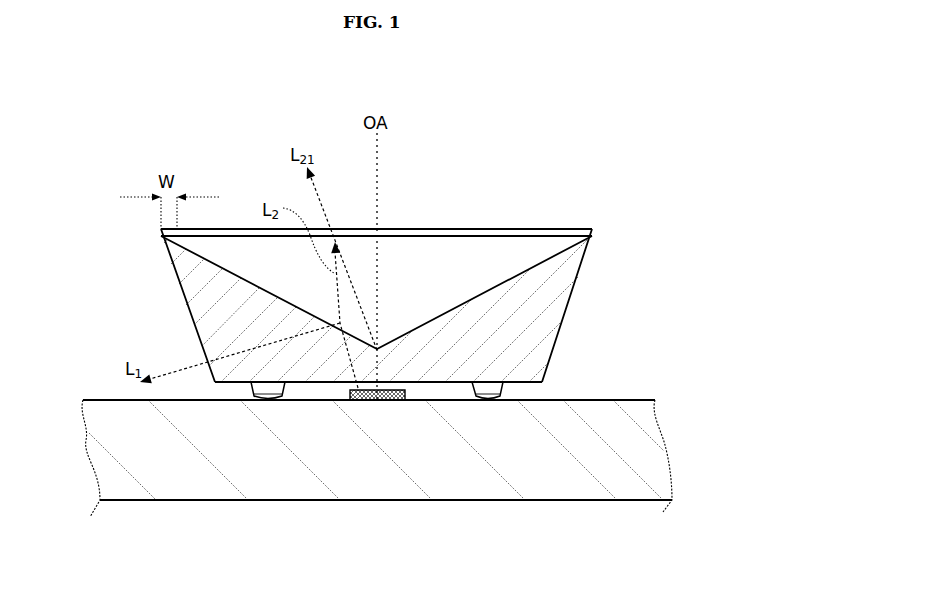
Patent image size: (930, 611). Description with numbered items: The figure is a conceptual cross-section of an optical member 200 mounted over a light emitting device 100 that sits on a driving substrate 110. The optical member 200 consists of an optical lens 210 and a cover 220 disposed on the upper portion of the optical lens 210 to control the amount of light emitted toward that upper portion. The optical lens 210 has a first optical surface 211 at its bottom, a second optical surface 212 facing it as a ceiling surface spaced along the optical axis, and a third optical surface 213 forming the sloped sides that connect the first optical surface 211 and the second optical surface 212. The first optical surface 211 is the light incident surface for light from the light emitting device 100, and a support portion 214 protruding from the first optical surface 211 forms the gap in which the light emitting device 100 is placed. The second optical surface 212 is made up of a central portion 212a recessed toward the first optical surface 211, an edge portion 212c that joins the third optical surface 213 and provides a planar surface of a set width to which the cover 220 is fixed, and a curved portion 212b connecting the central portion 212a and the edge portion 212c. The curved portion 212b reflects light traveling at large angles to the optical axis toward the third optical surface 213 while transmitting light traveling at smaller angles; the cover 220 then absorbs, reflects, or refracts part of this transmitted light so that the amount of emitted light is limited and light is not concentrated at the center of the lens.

The light emitting device 100 is at (413, 500).
The driving substrate 110 is at (538, 455).
The optical member 200 is at (557, 124).
The optical lens 210 is at (716, 250).
The first optical surface 211 is at (470, 362).
The second optical surface 212 is at (665, 225).
The central portion 212a is at (383, 328).
The curved portion 212b is at (516, 257).
The edge portion 212c is at (592, 230).
The third optical surface 213 is at (561, 328).
The support portion 214 is at (503, 397).
The cover 220 is at (357, 229).